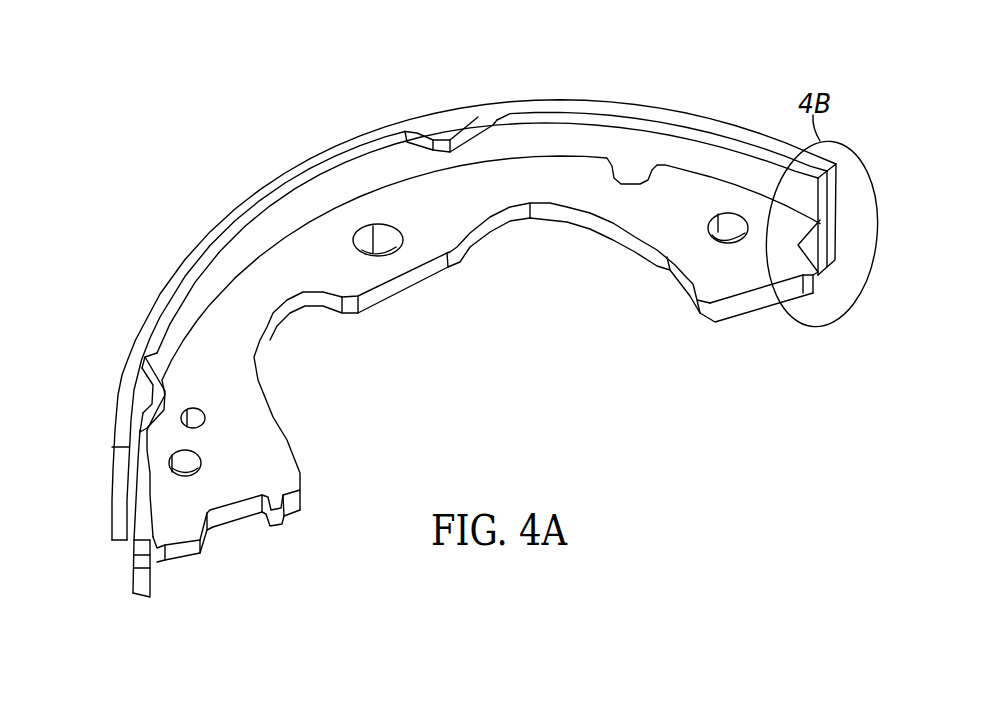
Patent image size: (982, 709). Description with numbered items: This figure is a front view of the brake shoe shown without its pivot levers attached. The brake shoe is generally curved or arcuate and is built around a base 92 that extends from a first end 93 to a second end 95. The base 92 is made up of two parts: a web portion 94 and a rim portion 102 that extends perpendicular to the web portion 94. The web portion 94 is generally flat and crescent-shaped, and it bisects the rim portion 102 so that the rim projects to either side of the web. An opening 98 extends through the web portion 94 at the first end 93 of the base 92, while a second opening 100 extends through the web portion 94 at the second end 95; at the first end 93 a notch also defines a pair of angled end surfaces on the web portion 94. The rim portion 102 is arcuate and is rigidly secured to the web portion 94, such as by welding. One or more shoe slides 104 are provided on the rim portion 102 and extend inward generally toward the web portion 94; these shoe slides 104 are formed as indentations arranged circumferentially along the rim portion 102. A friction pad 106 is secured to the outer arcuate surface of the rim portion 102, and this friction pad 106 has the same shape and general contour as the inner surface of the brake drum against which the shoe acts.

The base 92 is at (758, 327).
The first end 93 is at (795, 83).
The web portion 94 is at (710, 270).
The second end 95 is at (163, 573).
The opening 98 is at (725, 206).
The opening 100 is at (207, 412).
The rim portion 102 is at (765, 160).
The shoe slides 104 is at (443, 140).
The friction pad 106 is at (453, 113).